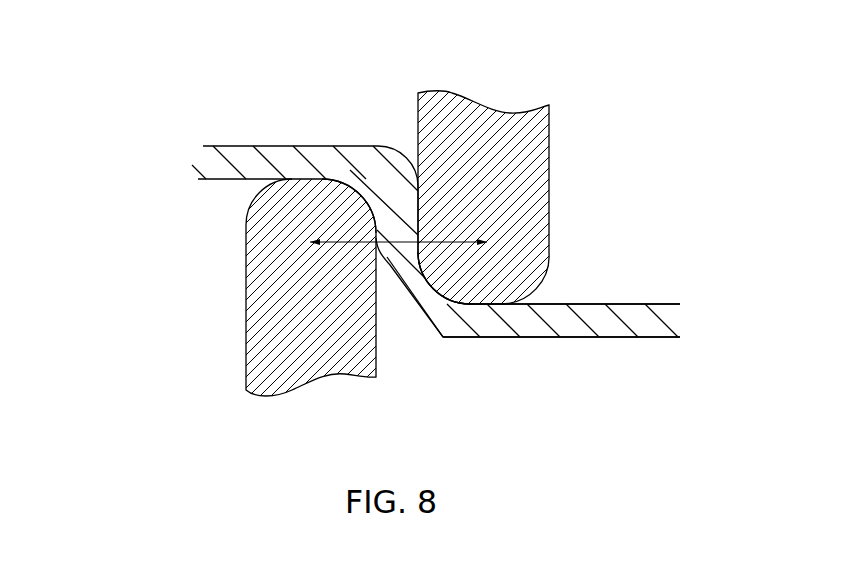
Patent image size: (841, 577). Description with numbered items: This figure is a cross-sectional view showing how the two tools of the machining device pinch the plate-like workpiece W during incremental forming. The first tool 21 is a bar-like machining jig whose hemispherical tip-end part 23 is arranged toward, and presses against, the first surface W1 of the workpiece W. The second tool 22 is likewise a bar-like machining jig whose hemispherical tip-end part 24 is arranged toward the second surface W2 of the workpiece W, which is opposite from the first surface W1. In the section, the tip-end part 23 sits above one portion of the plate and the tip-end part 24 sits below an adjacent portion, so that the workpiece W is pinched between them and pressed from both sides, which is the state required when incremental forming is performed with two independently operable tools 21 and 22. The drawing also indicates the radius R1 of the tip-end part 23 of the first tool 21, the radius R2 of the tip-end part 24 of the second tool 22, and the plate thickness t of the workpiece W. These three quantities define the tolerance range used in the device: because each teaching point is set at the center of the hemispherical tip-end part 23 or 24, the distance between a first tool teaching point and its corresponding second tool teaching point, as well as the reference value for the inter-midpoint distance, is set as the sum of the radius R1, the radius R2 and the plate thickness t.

The plate-like workpiece W is at (248, 162).
The first surface W1 is at (616, 305).
The second surface W2 is at (582, 337).
The tip-end part 23 is at (551, 142).
The first tool 21 is at (556, 197).
The tip-end part 24 is at (246, 320).
The second tool 22 is at (227, 287).
The radius R1 is at (447, 232).
The radius R2 is at (348, 192).
The plate thickness t is at (392, 257).